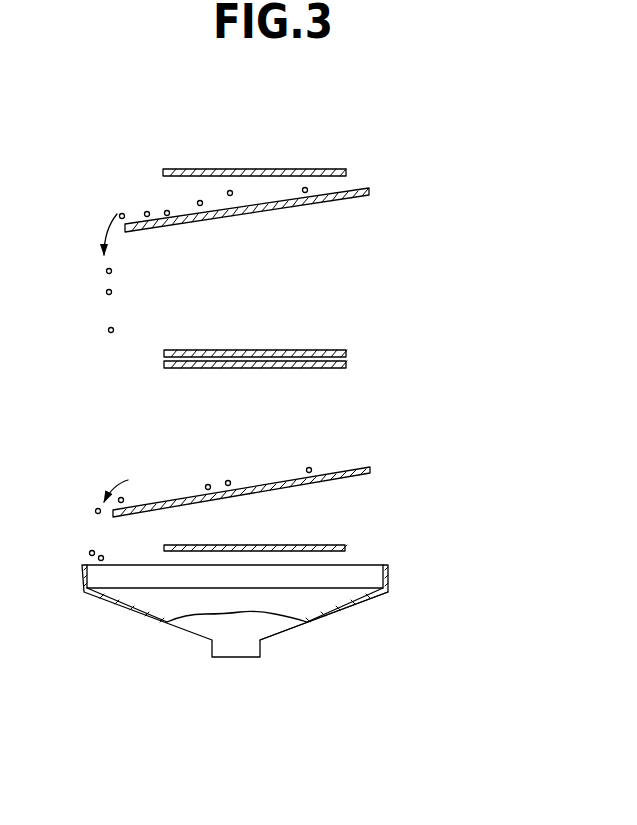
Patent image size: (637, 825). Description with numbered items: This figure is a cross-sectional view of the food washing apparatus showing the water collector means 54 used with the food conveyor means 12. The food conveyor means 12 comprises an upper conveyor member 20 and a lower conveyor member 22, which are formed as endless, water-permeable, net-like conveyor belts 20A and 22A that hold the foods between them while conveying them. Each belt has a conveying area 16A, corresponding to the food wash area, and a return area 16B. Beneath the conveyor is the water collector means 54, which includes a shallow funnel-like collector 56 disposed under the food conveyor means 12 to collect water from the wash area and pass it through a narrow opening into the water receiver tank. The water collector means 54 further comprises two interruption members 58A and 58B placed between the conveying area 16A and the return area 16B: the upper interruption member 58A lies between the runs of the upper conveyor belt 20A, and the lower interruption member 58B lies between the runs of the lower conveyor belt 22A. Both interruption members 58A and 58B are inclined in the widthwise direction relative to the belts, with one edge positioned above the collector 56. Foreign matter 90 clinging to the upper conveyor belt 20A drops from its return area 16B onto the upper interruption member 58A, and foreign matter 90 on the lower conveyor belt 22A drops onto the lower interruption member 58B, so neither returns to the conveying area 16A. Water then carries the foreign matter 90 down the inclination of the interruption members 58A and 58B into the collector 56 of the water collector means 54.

The food conveyor means 12 is at (310, 348).
The conveying area 16A is at (228, 349).
The return area 16B is at (213, 168).
The upper conveyor member 20 is at (294, 166).
The upper conveyor belt 20A is at (297, 350).
The lower conveyor member 22 is at (350, 544).
The lower conveyor belt 22A is at (312, 368).
The water collector means 54 is at (294, 618).
The collector 56 is at (325, 616).
The upper interruption member 58A is at (370, 189).
The lower interruption member 58B is at (372, 470).
The foreign matter 90 is at (165, 211).